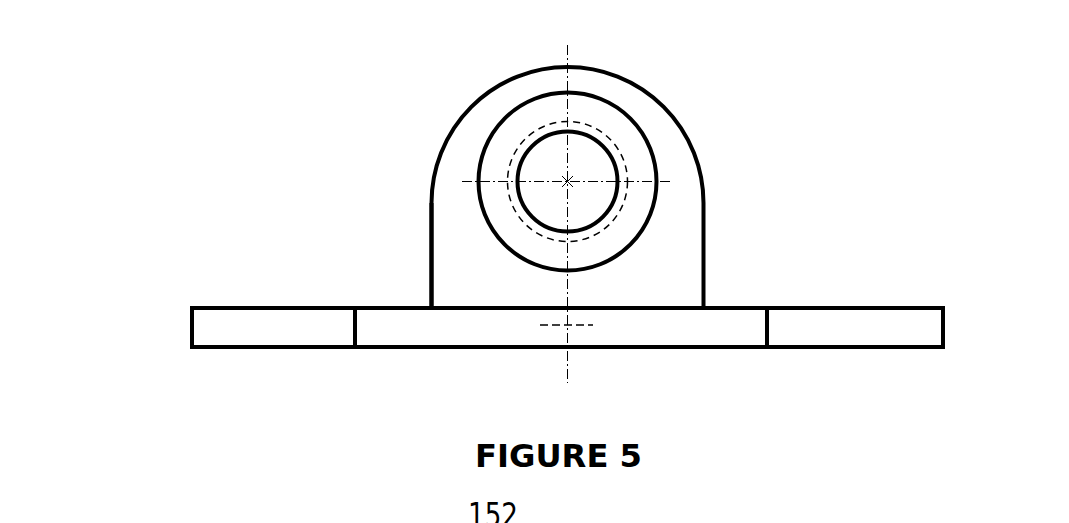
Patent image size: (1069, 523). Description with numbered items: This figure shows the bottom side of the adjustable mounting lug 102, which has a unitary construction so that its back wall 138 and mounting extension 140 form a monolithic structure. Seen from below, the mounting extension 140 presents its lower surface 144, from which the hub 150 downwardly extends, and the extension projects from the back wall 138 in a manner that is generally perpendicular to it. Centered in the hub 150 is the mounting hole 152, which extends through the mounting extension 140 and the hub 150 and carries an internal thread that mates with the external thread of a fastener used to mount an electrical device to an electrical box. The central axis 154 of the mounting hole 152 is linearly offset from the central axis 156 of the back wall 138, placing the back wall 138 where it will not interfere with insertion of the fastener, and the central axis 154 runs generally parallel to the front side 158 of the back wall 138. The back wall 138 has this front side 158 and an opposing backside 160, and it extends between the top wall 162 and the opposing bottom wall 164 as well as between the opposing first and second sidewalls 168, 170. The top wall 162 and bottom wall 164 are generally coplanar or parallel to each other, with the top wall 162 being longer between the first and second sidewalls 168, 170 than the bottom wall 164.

The adjustable mounting lug 102 is at (882, 127).
The back wall 138 is at (860, 335).
The mounting extension 140 is at (673, 262).
The lower surface 144 is at (447, 279).
The hub 150 is at (618, 127).
The mounting hole 152 is at (530, 165).
The central axis of the mounting hole 154 is at (567, 181).
The central axis of the back wall 156 is at (572, 327).
The front side 158 is at (247, 308).
The backside 160 is at (230, 350).
The top wall 162 is at (798, 504).
The bottom wall 164 is at (672, 337).
The first sidewall 168 is at (192, 325).
The second sidewall 170 is at (943, 313).